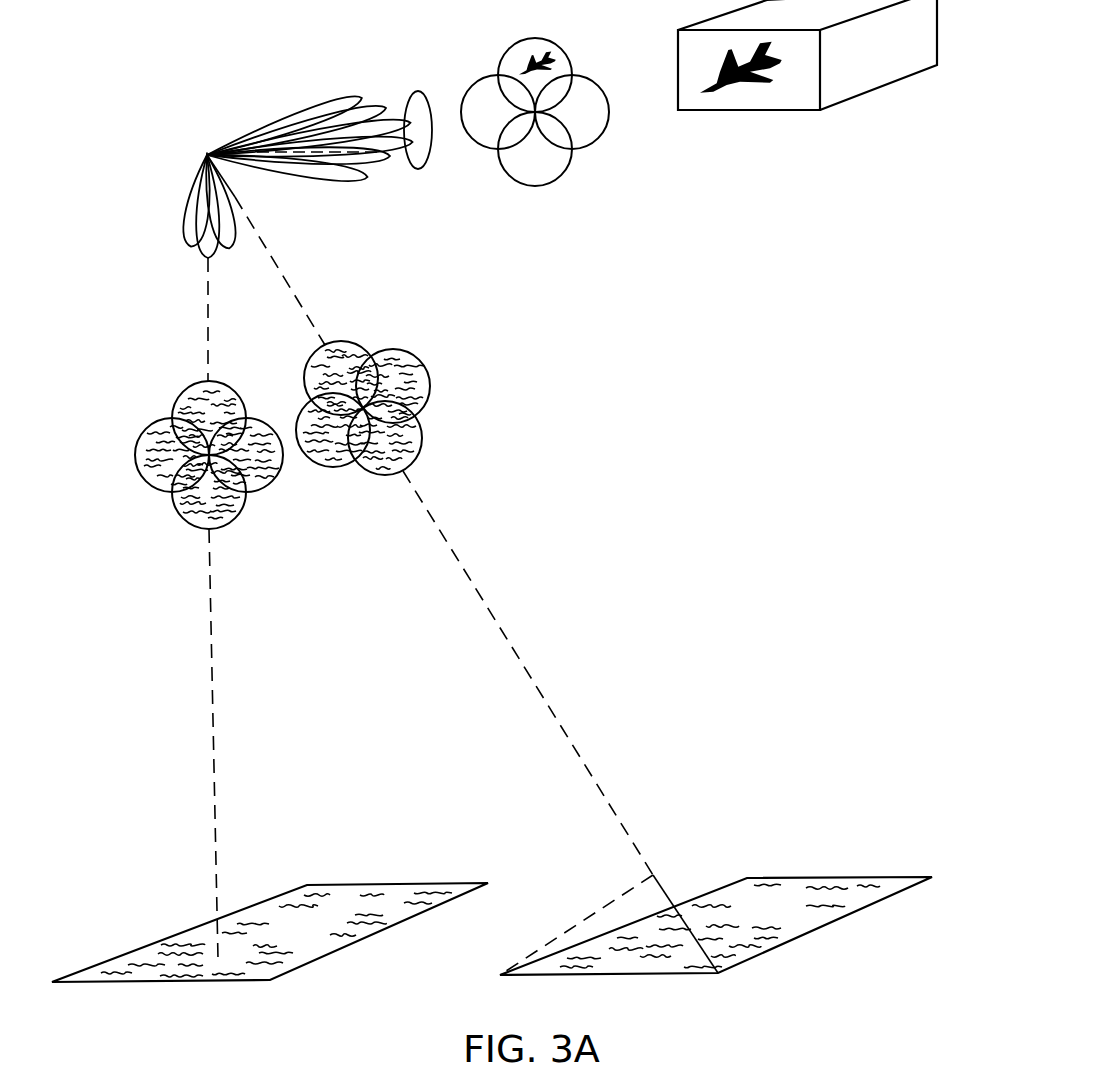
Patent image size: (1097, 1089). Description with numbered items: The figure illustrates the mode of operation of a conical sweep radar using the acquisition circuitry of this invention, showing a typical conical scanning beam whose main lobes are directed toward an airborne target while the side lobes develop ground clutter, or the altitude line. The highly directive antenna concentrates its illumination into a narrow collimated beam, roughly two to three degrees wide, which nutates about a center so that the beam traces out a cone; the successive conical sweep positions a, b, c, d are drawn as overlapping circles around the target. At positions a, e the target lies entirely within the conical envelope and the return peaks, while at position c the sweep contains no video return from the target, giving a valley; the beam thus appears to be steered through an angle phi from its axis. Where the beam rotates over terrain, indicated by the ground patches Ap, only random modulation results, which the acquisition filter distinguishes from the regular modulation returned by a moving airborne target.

The conical sweep position a is at (535, 63).
The conical sweep position b is at (582, 112).
The conical sweep position c is at (535, 164).
The conical sweep position d is at (490, 112).
The antenna aperture area Ap is at (492, 929).
The beam steering angle phi prime phi is at (325, 158).